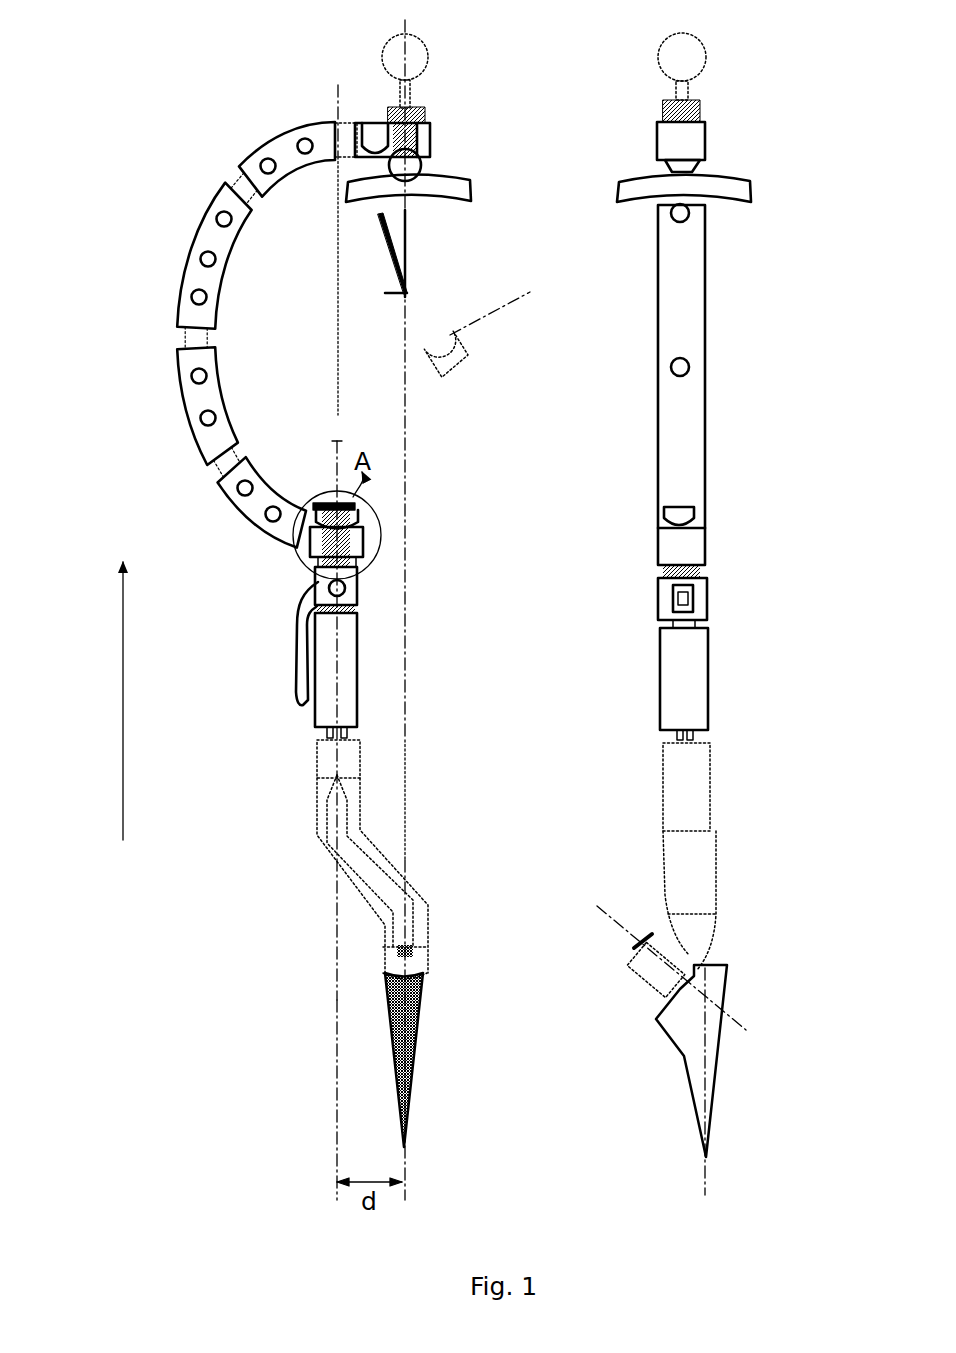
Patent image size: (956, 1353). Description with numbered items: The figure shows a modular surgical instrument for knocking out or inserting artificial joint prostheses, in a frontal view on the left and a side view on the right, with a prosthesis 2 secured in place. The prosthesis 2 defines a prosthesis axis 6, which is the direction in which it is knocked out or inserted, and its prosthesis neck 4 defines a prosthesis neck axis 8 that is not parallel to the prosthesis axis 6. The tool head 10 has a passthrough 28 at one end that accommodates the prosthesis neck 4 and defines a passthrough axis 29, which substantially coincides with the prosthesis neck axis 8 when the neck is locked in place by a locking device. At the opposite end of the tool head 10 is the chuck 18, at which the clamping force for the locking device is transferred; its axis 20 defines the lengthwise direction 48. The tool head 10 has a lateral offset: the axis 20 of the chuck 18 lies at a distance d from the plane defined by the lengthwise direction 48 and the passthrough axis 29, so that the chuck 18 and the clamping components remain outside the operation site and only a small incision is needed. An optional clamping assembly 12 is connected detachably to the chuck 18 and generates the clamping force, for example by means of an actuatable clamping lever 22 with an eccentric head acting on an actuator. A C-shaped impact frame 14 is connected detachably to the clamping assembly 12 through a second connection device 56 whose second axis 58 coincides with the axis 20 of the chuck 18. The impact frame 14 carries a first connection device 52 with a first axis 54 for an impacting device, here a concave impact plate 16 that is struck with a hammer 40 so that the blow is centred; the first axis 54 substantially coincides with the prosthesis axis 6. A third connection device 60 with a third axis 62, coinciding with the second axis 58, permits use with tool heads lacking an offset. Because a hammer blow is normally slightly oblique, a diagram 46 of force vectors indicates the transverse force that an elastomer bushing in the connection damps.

The prosthesis 2 is at (693, 1047).
The prosthesis neck 4 is at (417, 953).
The prosthesis axis 6 is at (407, 757).
The prosthesis neck axis 8 is at (736, 1019).
The tool head 10 is at (684, 842).
The clamping assembly 12 is at (342, 662).
The impact frame 14 is at (194, 224).
The impact plate 16 is at (450, 187).
The chuck 18 is at (327, 745).
The axis of chuck 20 is at (337, 1087).
The clamping lever 22 is at (303, 637).
The passthrough 28 is at (393, 950).
The passthrough axis 29 is at (403, 935).
The hammer 40 is at (457, 348).
The diagram of force vectors 46 is at (407, 277).
The lengthwise direction 48 is at (122, 720).
The first connection device 52 is at (437, 101).
The first axis 54 is at (410, 22).
The second connection device 56 is at (298, 565).
The second axis 58 is at (338, 441).
The third connection device 60 is at (330, 116).
The third axis 62 is at (340, 88).